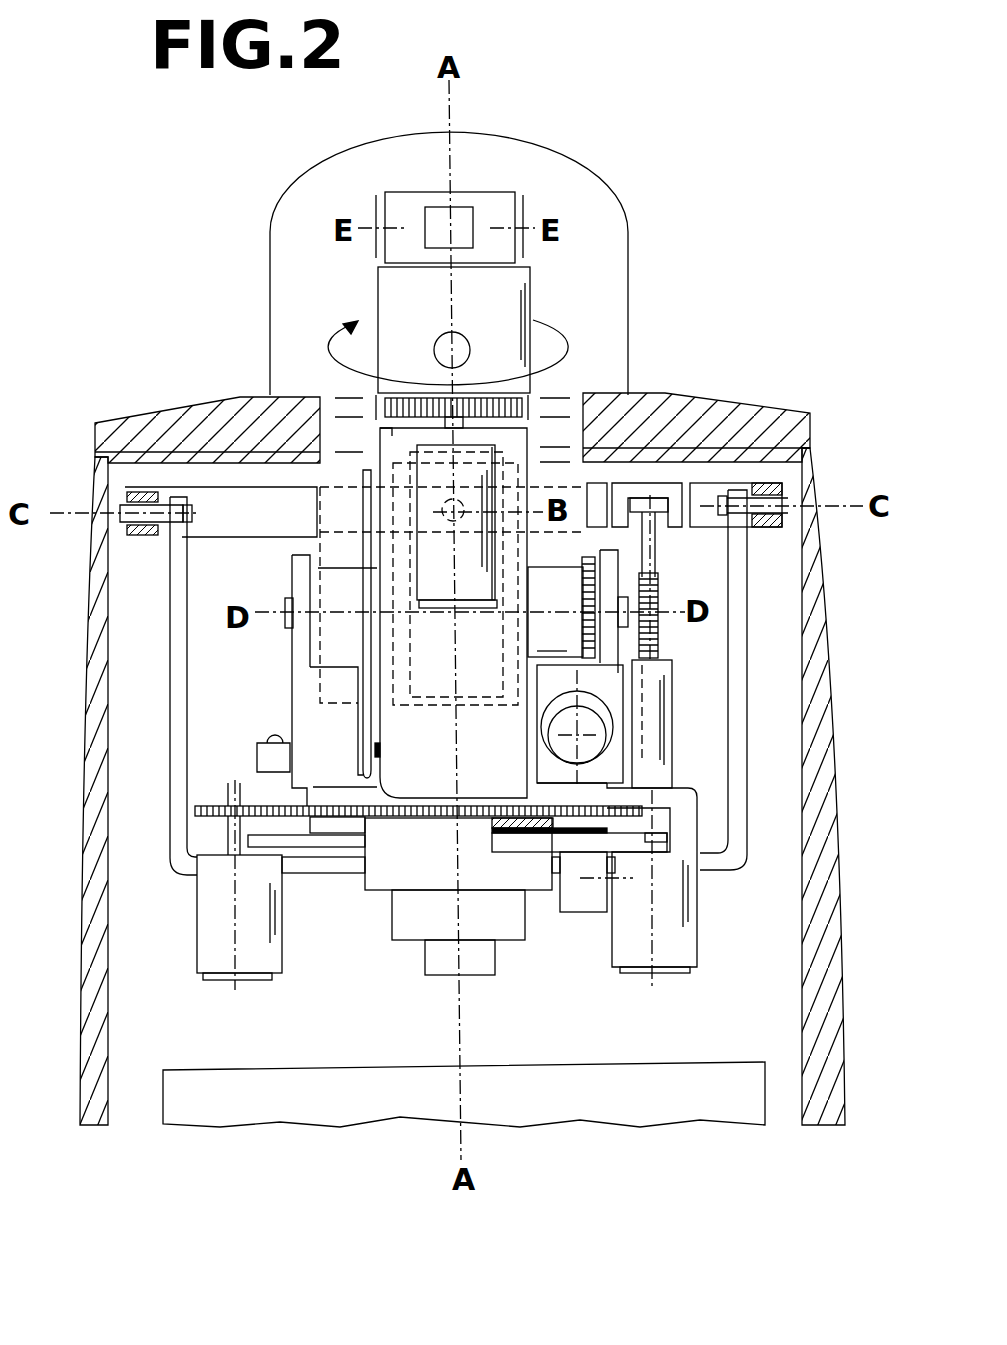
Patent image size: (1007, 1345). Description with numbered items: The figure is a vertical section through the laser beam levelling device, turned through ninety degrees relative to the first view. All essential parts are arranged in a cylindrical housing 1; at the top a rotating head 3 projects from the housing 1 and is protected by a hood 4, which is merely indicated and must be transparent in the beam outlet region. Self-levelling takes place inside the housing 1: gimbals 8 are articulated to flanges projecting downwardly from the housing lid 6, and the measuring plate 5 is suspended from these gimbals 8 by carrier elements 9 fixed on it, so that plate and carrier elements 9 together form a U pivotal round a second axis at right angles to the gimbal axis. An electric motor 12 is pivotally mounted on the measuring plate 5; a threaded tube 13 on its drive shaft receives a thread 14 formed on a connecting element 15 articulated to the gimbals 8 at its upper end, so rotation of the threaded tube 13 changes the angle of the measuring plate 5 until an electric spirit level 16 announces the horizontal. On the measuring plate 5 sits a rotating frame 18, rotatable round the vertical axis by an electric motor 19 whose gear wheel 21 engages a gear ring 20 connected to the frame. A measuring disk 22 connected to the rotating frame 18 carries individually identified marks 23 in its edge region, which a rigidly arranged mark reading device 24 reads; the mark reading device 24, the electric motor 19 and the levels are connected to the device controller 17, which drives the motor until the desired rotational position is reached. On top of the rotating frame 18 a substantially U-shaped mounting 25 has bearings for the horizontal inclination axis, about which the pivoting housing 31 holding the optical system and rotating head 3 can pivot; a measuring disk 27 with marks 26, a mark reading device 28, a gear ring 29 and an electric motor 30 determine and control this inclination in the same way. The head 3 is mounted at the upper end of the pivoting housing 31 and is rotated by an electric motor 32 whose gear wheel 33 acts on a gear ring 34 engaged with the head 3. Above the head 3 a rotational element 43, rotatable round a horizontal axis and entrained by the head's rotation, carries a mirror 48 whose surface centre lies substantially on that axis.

The housing 1 is at (817, 593).
The rotating head 3 is at (562, 267).
The hood 4 is at (632, 307).
The measuring plate 5 is at (317, 867).
The housing lid 6 is at (783, 433).
The gimbals 8 is at (136, 540).
The carrier elements 9 is at (172, 706).
The electric motor 12 is at (690, 948).
The threaded tube 13 is at (665, 717).
The thread 14 is at (658, 627).
The connecting element 15 is at (652, 548).
The electric spirit level 16 is at (273, 757).
The device controller 17 is at (217, 1088).
The rotating frame 18 is at (325, 825).
The electric motor 19 is at (257, 942).
The gear ring 20 is at (282, 813).
The gear wheel 21 is at (215, 808).
The measuring disk 22 is at (575, 838).
The marks 23 is at (653, 840).
The mark reading device 24 is at (497, 863).
The mounting 25 is at (300, 575).
The marks 26 is at (375, 752).
The measuring disk 27 is at (370, 718).
The mark reading device 28 is at (310, 680).
The gear ring 29 is at (582, 602).
The electric motor 30 is at (558, 725).
The pivoting housing 31 is at (417, 733).
The electric motor 32 is at (483, 458).
The gear wheel 33 is at (530, 398).
The gear ring 34 is at (383, 430).
The rotational element 43 is at (485, 208).
The mirror 48 is at (442, 225).